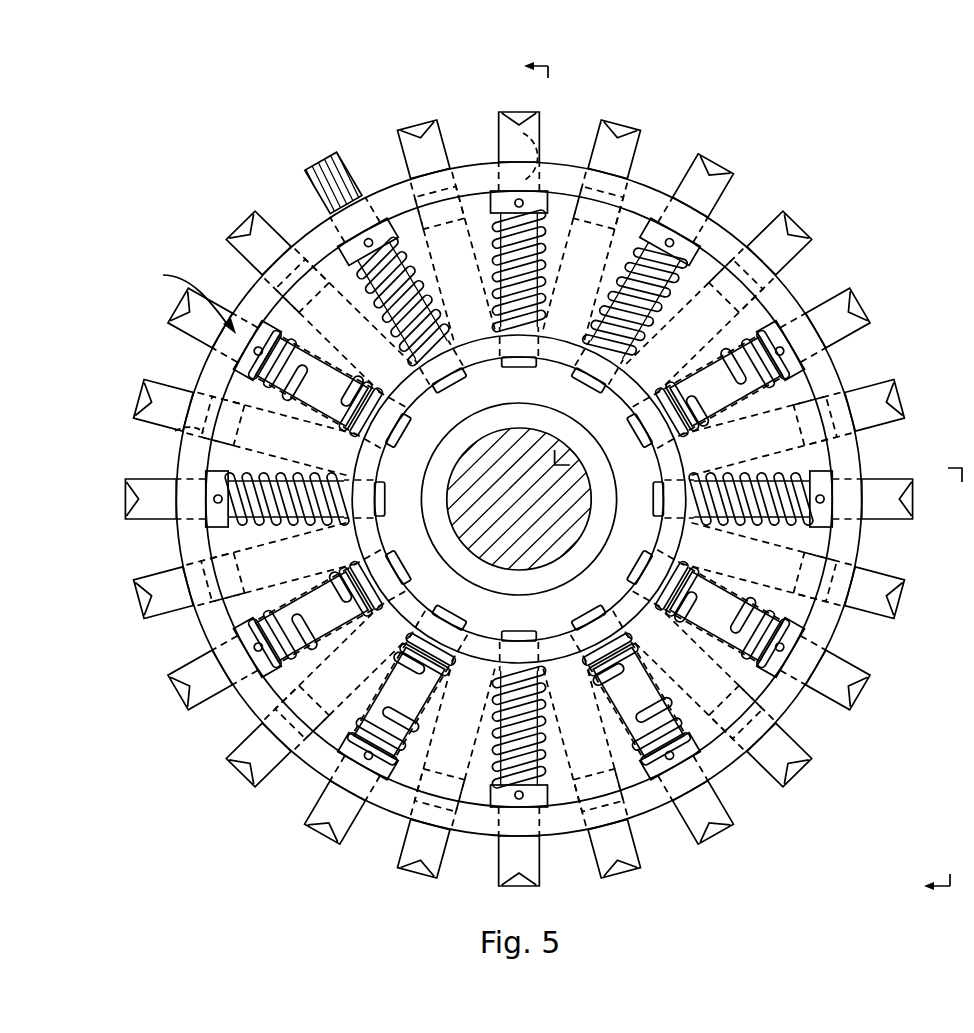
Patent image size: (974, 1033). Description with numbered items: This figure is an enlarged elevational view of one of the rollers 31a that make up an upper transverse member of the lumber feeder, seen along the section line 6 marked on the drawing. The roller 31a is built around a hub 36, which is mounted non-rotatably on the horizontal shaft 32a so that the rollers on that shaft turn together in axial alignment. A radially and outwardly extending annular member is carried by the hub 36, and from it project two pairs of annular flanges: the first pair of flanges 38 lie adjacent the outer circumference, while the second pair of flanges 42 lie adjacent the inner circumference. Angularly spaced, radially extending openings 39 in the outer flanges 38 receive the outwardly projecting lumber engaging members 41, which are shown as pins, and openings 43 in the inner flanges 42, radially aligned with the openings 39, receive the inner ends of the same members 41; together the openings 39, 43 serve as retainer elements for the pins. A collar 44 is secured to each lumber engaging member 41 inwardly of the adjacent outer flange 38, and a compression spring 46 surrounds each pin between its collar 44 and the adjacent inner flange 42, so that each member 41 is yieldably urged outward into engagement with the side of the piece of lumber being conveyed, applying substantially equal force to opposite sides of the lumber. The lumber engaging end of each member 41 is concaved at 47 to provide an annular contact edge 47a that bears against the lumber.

The section line 6- 6 is at (729, 478).
The roller 31a is at (175, 298).
The horizontal shaft 32a is at (519, 499).
The hub 36 is at (518, 582).
The annular flanges 38 is at (645, 205).
The radially extending openings 39 is at (178, 430).
The lumber engaging members 41 is at (628, 850).
The annular flanges 42 is at (563, 345).
The openings 43 is at (672, 478).
The collar 44 is at (490, 812).
The compression spring 46 is at (548, 712).
The concaved end 47 is at (333, 195).
The annular contact edge 47a is at (808, 762).